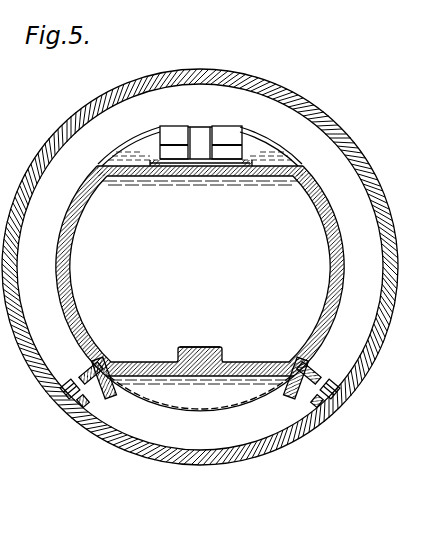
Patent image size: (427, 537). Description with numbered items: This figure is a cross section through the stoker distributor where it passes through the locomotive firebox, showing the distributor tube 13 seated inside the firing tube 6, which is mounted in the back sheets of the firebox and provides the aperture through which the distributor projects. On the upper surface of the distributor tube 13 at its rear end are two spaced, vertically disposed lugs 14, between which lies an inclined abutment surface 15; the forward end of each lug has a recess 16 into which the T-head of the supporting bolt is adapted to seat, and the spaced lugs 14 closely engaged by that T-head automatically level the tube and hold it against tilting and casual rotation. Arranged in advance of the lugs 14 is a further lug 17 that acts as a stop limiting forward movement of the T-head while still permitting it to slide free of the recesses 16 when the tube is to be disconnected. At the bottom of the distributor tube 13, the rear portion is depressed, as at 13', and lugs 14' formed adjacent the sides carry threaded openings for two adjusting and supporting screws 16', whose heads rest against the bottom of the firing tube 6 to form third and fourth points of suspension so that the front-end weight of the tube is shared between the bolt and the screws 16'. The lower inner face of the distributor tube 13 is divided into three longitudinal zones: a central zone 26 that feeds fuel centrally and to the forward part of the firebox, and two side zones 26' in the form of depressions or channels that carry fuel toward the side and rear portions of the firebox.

The firing tube 6 is at (356, 153).
The distributor tube 13 is at (209, 271).
The depressed rear bottom portion 13' is at (200, 408).
The lugs 14 is at (200, 134).
The bottom lugs 14' is at (200, 389).
The inclined abutment surface 15 is at (199, 135).
The recess 16 is at (200, 145).
The adjusting and supporting screws 16' is at (200, 375).
The stop lug 17 is at (203, 162).
The central zone 26 is at (202, 332).
The side zones 26' is at (200, 361).